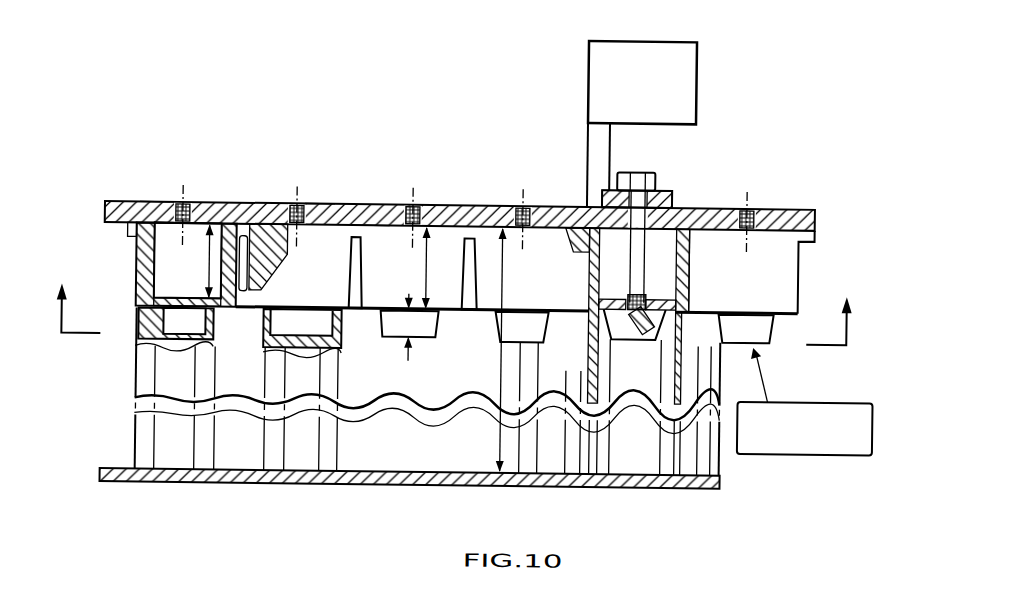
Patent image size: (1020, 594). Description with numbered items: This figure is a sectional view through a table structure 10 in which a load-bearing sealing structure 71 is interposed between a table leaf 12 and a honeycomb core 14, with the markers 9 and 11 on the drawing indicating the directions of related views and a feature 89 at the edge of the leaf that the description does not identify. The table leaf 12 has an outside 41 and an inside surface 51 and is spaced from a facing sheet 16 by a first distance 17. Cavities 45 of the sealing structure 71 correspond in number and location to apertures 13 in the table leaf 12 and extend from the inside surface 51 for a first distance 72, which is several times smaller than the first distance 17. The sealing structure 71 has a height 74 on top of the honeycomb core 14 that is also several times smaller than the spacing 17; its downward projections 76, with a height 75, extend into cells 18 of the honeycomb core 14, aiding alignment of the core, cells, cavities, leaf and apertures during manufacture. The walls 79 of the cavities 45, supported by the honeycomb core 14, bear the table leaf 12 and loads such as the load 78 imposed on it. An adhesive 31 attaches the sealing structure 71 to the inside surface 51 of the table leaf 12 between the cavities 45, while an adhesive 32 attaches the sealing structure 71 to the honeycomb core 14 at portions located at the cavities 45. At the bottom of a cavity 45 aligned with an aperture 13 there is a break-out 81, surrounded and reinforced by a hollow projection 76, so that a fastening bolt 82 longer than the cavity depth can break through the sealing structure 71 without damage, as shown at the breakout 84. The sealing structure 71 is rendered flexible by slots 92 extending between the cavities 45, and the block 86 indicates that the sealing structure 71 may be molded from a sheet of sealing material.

The plate lower surface 9 is at (258, 223).
The table structure 10 is at (124, 381).
The section line 11 is at (60, 262).
The table leaf 12 is at (503, 201).
The apertures 13 is at (190, 202).
The honeycomb core 14 is at (136, 437).
The facing sheet 16 is at (426, 481).
The first distance 17 is at (503, 444).
The cells 18 is at (192, 346).
The adhesive 31 is at (320, 203).
The adhesive 32 is at (140, 316).
The outside 41 is at (155, 202).
The cavities 45 is at (158, 247).
The inside surface 51 is at (379, 233).
The load-bearing sealing structure 71 is at (124, 240).
The first distance 72 is at (210, 273).
The height 74 is at (427, 271).
The height 75 is at (410, 349).
The downward projections 76 is at (140, 330).
The load 78 is at (629, 80).
The walls 79 is at (249, 287).
The break-out 81 is at (166, 298).
The fastening bolt 82 is at (592, 258).
The breakout 84 is at (647, 330).
The block 86 is at (812, 446).
The lip 89 is at (108, 212).
The slots 92 is at (268, 228).